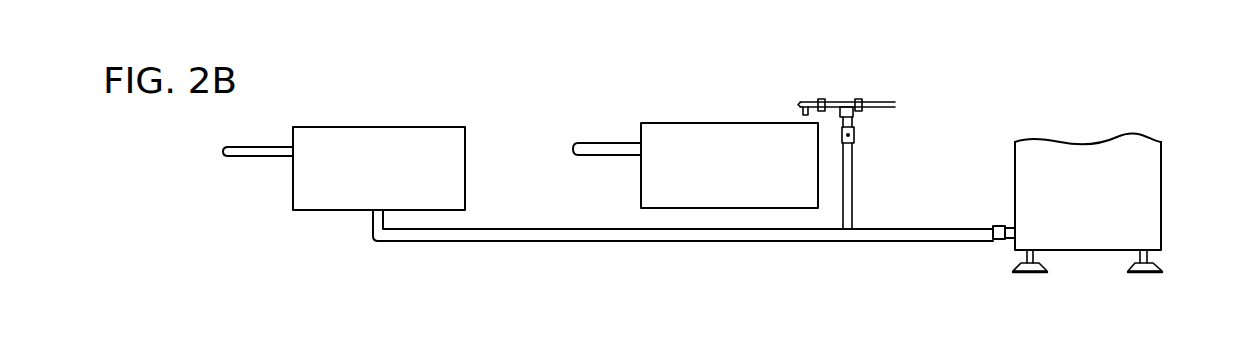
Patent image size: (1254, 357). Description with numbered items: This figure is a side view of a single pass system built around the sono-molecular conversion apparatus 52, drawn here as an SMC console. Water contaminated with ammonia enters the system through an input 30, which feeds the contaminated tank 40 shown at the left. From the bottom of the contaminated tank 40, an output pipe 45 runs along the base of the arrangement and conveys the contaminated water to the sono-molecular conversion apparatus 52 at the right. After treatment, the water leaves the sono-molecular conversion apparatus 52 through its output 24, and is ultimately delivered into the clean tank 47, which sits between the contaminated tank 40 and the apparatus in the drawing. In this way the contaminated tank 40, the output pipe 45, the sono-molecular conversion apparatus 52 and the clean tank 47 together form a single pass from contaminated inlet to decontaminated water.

The output 24 is at (1011, 243).
The input 30 is at (225, 148).
The contaminated tank 40 is at (321, 200).
The output pipe 45 is at (390, 243).
The clean tank 47 is at (672, 197).
The sono-molecular conversion apparatus 52 is at (1161, 172).